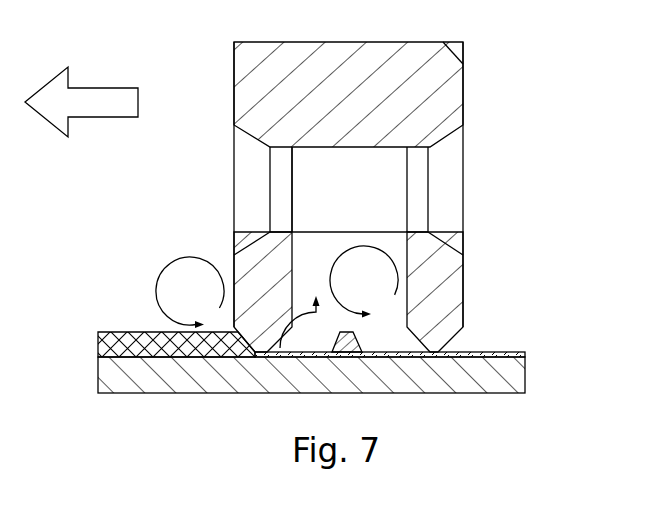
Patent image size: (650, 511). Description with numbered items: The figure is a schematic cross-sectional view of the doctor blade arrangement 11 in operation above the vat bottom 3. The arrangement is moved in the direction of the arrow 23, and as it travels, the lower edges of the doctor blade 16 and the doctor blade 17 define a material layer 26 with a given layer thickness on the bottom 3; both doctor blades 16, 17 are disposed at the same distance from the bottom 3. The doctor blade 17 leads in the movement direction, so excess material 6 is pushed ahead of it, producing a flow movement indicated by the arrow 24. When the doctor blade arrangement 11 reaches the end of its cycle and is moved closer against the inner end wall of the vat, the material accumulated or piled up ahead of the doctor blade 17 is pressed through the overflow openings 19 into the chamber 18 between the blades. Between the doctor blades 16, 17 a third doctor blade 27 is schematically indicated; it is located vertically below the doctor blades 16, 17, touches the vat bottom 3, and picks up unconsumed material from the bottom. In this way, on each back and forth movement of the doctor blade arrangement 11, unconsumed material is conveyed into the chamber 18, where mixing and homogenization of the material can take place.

The bottom 3 is at (500, 373).
The excess material 6 is at (100, 330).
The doctor blade arrangement 11 is at (422, 102).
The doctor blade 16 is at (425, 267).
The doctor blade 17 is at (262, 278).
The chamber 18 is at (317, 250).
The overflow openings 19 is at (413, 188).
The arrow 23 is at (105, 87).
The arrow 24 is at (160, 267).
The material layer 26 is at (508, 352).
The third doctor blade 27 is at (357, 340).